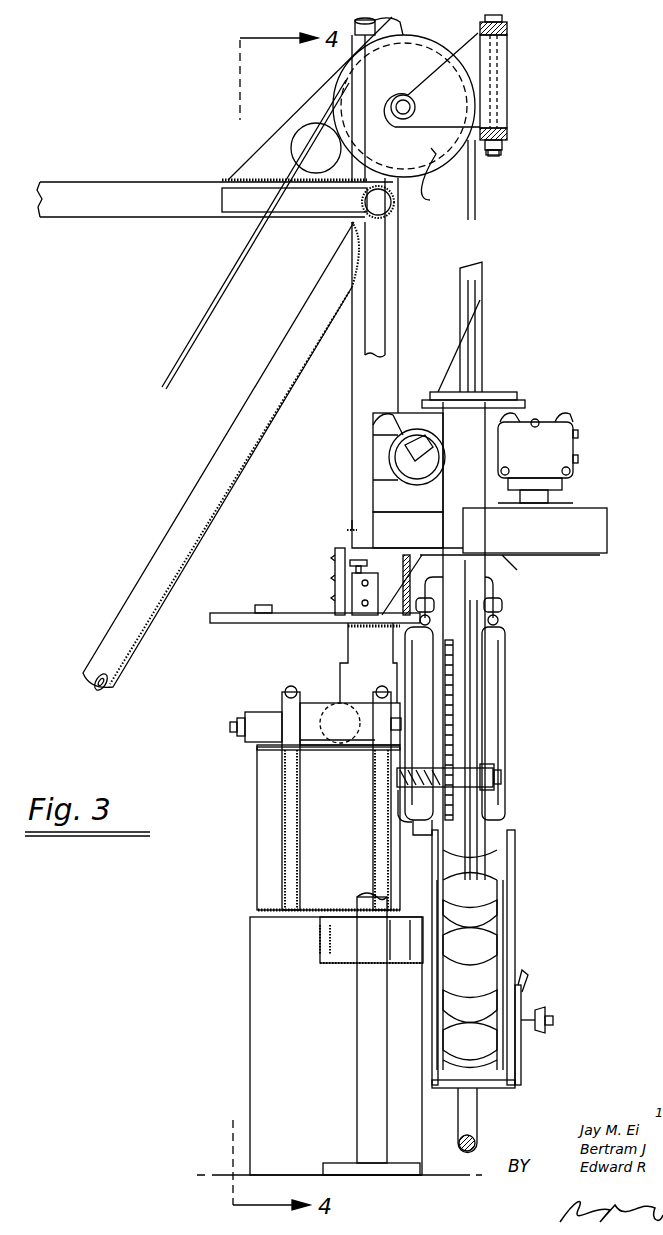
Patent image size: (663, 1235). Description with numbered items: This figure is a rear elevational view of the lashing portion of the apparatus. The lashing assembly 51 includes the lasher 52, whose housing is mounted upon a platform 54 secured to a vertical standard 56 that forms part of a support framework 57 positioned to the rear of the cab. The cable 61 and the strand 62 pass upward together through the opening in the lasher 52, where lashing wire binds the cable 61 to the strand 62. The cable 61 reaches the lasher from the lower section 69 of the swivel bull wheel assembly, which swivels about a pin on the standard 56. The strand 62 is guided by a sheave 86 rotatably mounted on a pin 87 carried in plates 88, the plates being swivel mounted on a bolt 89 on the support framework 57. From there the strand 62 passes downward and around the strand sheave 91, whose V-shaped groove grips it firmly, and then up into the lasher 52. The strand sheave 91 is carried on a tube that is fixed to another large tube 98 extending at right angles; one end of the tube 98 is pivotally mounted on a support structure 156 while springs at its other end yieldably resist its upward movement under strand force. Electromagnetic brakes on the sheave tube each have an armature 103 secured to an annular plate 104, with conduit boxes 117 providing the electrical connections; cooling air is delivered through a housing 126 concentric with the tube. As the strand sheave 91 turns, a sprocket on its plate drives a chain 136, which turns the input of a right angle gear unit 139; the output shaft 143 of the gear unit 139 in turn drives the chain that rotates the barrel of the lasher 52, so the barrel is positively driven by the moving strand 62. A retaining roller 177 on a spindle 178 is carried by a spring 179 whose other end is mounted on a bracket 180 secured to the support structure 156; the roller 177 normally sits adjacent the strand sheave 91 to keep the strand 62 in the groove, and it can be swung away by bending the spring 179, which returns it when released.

The lashing assembly 51 is at (545, 357).
The lasher 52 is at (488, 392).
The platform 54 is at (605, 512).
The vertical standard 56 is at (352, 395).
The support framework 57 is at (507, 137).
The cable 61 is at (468, 1113).
The strand 62 is at (210, 306).
The lower section 69 is at (512, 950).
The sheave 86 is at (436, 179).
The pin 87 is at (402, 95).
The plates 88 is at (455, 105).
The bolt 89 is at (492, 151).
The strand sheave 91 is at (478, 878).
The tube 98 is at (327, 712).
The armature 103 is at (412, 672).
The annular plate 104 is at (509, 675).
The conduit boxes 117 is at (500, 620).
The housing 126 is at (357, 668).
The chain 136 is at (455, 694).
The right angle gear unit 139 is at (547, 456).
The output shaft 143 is at (560, 500).
The support structure 156 is at (347, 859).
The retaining roller 177 is at (476, 770).
The spindle 178 is at (495, 778).
The spring 179 is at (421, 827).
The bracket 180 is at (402, 798).